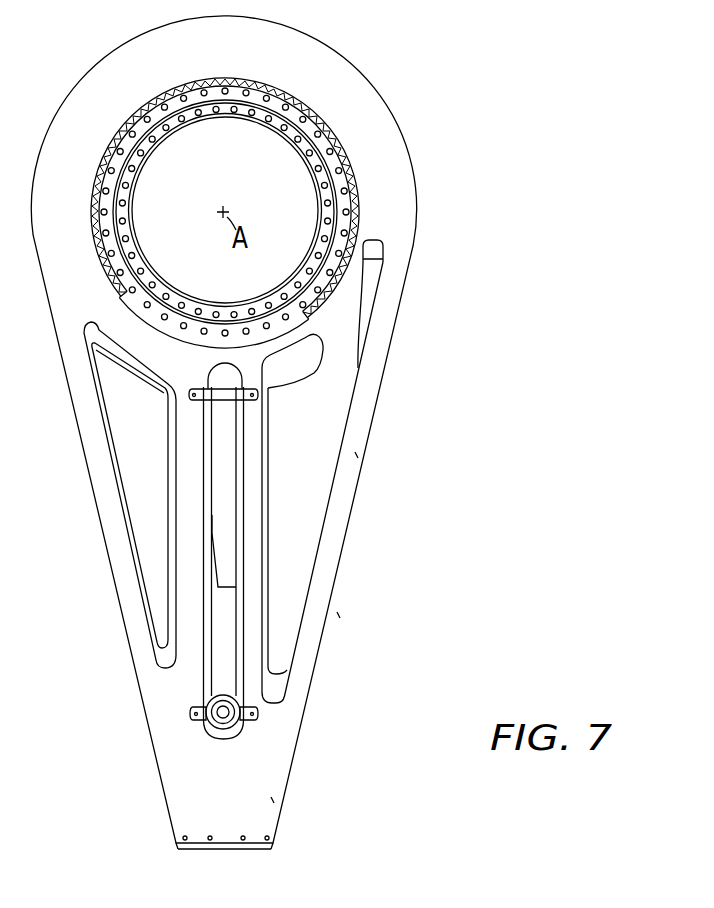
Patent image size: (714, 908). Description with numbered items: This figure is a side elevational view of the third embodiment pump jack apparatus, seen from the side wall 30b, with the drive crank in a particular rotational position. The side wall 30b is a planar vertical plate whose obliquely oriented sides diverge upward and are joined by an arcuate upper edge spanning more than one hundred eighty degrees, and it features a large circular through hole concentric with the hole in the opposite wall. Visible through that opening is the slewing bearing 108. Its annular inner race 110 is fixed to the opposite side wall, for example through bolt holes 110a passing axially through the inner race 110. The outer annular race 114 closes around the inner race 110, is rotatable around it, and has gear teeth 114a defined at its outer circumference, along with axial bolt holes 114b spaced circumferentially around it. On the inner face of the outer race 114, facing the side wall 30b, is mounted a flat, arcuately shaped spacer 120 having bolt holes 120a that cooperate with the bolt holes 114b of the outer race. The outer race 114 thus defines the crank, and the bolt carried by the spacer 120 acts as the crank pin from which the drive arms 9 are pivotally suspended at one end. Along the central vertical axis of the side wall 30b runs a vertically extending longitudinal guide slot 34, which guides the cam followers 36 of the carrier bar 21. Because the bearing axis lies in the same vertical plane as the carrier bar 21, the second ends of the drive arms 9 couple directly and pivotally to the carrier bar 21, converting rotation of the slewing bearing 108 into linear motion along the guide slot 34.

The side wall 30b is at (370, 118).
The slewing bearing 108 is at (225, 132).
The inner race 110 is at (266, 121).
The bolt holes 110a is at (140, 266).
The outer annular race 114 is at (156, 115).
The gear teeth 114a is at (266, 86).
The axial bolt holes 114b is at (300, 272).
The spacer 120 is at (284, 367).
The bolt holes 120a is at (221, 335).
The drive arms 9 is at (222, 653).
The longitudinal guide slot 34 is at (223, 480).
The carrier bar 21 is at (228, 708).
The cam followers 36 is at (222, 727).